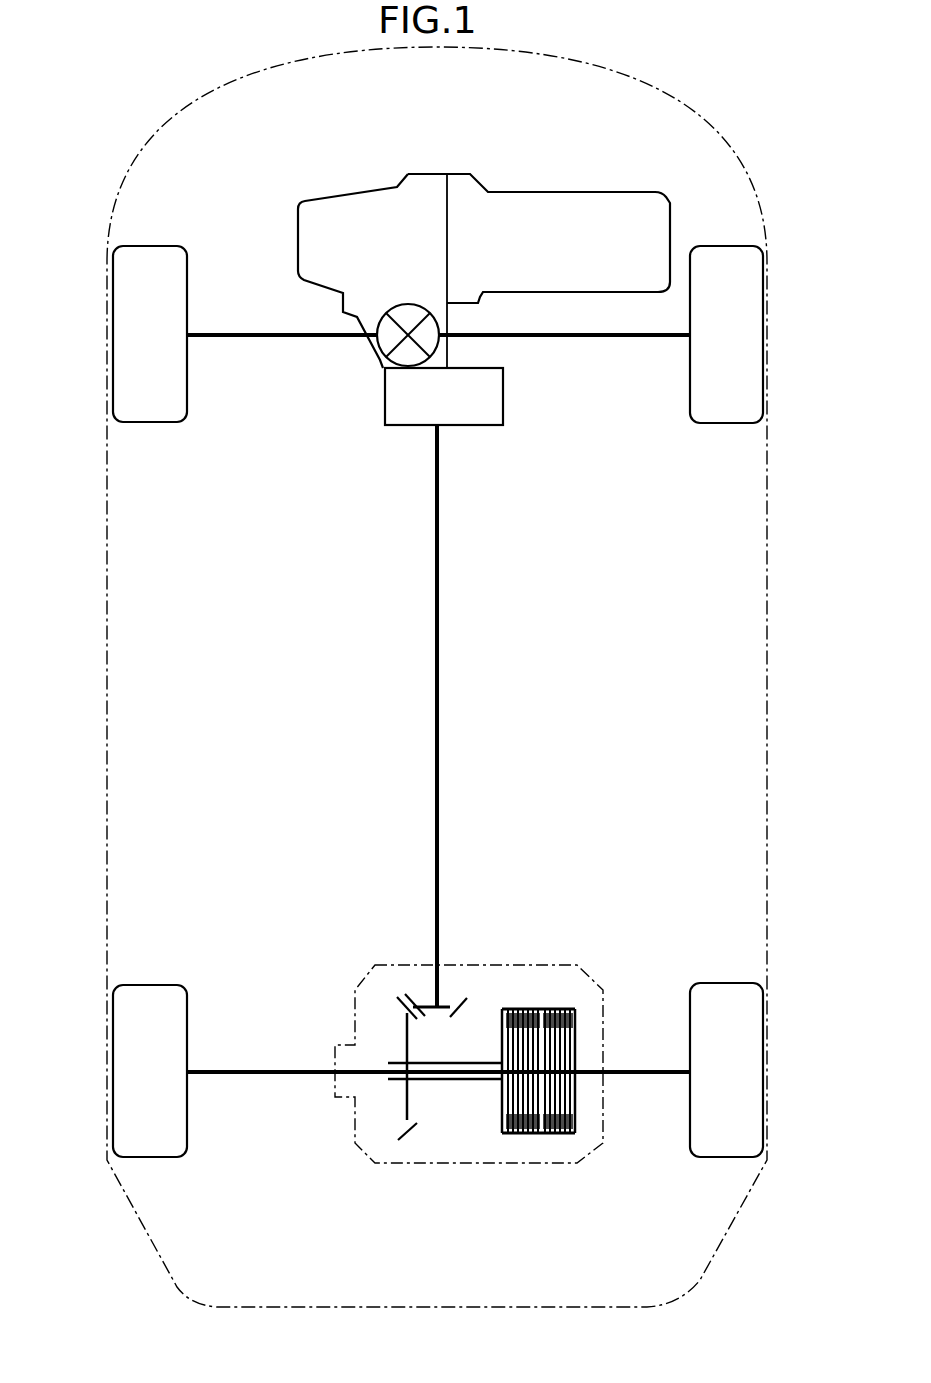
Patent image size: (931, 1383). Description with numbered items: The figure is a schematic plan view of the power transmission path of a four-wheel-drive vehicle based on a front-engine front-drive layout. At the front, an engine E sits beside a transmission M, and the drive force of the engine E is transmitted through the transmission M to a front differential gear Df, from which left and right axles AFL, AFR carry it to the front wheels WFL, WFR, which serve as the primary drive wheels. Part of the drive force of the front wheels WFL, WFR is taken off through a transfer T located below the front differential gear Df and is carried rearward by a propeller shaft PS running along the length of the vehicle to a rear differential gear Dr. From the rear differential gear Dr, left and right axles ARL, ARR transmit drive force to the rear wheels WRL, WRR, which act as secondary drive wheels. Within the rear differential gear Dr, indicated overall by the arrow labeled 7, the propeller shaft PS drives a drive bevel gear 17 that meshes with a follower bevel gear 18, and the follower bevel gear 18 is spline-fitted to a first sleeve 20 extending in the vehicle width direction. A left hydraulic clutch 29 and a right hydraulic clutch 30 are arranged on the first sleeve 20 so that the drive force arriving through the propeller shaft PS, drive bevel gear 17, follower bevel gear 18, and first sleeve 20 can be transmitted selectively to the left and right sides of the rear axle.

The transmission M is at (391, 262).
The engine E is at (576, 262).
The transfer T is at (451, 413).
The front differential gear Df is at (372, 348).
The rear differential gear Dr is at (377, 962).
The propeller shaft PS is at (434, 682).
The left front axle AFL is at (247, 340).
The right front axle AFR is at (577, 340).
The left front wheel WFL is at (185, 405).
The right front wheel WFR is at (688, 395).
The left rear axle ARL is at (257, 1068).
The right rear axle ARR is at (635, 1068).
The left rear wheel WRL is at (185, 1143).
The right rear wheel WRR is at (687, 1132).
The rear drive unit 7 is at (568, 937).
The drive bevel gear 17 is at (462, 1004).
The follower bevel gear 18 is at (403, 1145).
The first sleeve 20 is at (445, 1081).
The left hydraulic clutch 29 is at (518, 1140).
The right hydraulic clutch 30 is at (557, 1142).